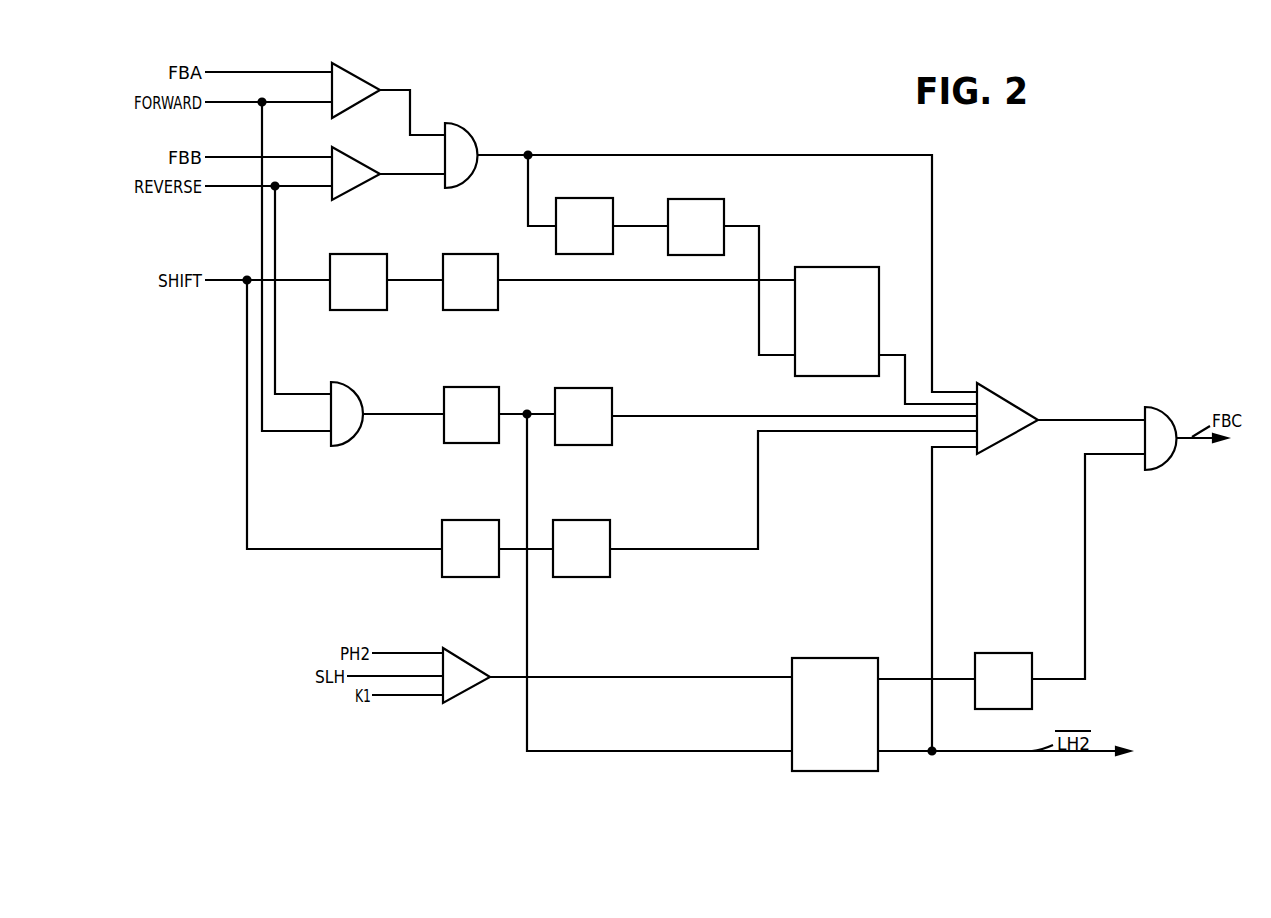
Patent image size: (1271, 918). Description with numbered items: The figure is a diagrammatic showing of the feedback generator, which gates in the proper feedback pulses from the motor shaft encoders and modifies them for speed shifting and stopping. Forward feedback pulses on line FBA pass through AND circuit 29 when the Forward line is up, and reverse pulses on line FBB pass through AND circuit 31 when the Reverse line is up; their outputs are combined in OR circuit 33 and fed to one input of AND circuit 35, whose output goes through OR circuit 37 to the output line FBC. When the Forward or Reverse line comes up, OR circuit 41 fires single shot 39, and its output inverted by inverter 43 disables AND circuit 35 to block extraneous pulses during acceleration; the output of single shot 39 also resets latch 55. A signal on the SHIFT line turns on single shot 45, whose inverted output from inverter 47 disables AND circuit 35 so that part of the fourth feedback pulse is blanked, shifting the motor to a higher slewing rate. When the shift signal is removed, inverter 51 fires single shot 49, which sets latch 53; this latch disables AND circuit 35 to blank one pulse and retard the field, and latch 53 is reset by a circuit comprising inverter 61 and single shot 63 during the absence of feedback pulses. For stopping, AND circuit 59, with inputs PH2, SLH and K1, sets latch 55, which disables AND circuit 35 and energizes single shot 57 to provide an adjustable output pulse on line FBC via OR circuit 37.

The AND circuit 29 is at (360, 80).
The AND circuit 31 is at (348, 160).
The OR circuit 33 is at (468, 135).
The AND circuit 35 is at (1003, 397).
The OR circuit 37 is at (1163, 405).
The single shot 39 is at (463, 387).
The OR circuit 41 is at (350, 393).
The inverter 43 is at (583, 388).
The single shot 45 is at (477, 520).
The inverter 47 is at (585, 520).
The single shot 49 is at (473, 253).
The inverter 51 is at (372, 254).
The latch 53 is at (851, 267).
The latch 55 is at (848, 658).
The single shot 57 is at (1020, 653).
The AND circuit 59 is at (460, 662).
The inverter 61 is at (595, 198).
The single shot 63 is at (710, 199).